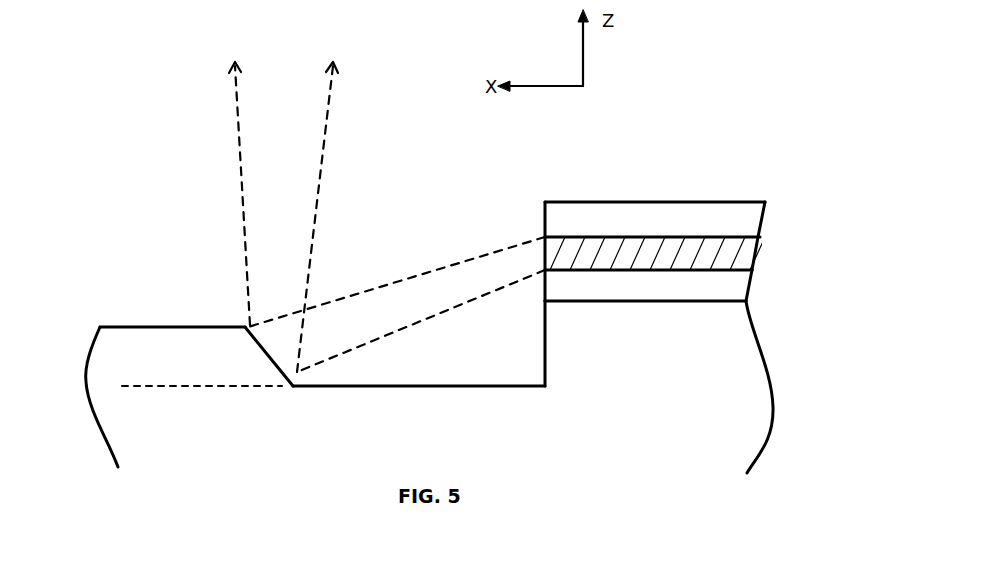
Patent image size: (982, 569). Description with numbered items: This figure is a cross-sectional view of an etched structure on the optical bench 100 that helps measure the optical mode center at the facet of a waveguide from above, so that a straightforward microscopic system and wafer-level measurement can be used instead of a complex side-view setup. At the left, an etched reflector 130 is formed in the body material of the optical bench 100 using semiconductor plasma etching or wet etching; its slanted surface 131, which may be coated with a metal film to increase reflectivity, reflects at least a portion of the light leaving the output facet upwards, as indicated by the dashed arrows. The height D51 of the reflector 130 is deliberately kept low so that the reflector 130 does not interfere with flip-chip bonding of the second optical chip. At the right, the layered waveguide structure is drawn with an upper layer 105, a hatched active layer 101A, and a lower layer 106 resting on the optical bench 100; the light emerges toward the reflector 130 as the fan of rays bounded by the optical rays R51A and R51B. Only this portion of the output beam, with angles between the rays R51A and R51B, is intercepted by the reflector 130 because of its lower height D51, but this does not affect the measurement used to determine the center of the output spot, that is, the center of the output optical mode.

The etched reflector 130 is at (150, 343).
The surface of the reflector 131 is at (267, 357).
The height of the reflector D51 is at (182, 327).
The optical ray R51A is at (363, 290).
The optical ray R51B is at (445, 317).
The upper layer 105 is at (565, 227).
The active (light-emitting) layer 101A is at (598, 260).
The lower layer 106 is at (632, 292).
The optical bench 100 is at (665, 410).